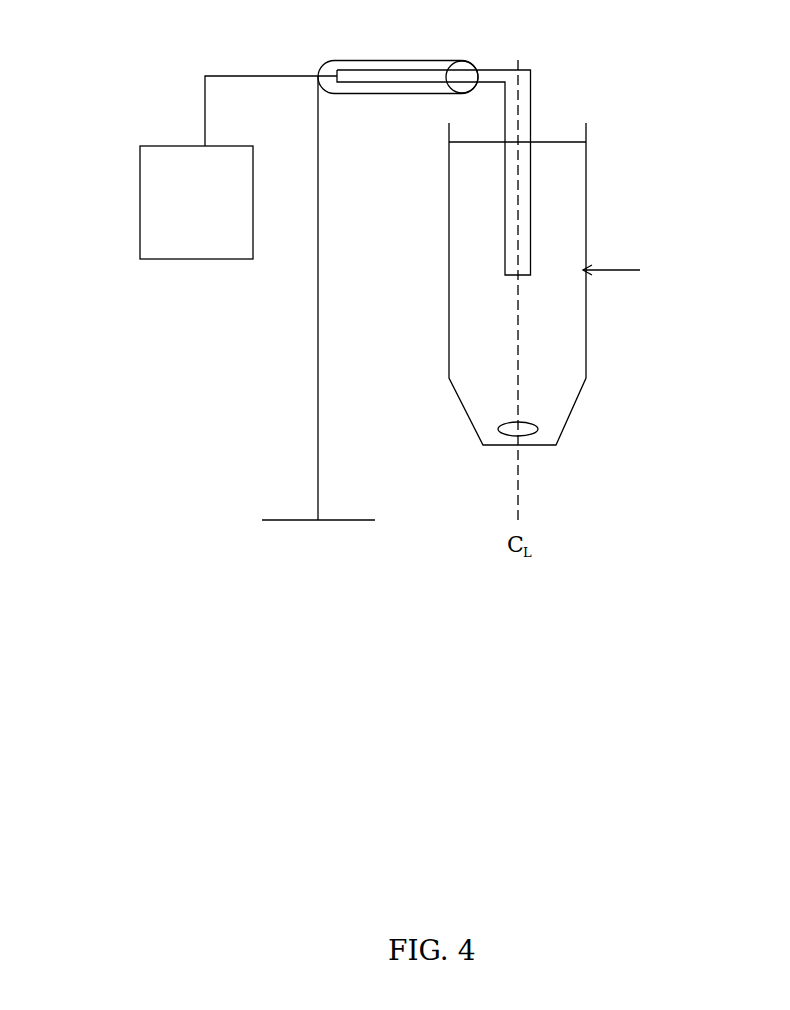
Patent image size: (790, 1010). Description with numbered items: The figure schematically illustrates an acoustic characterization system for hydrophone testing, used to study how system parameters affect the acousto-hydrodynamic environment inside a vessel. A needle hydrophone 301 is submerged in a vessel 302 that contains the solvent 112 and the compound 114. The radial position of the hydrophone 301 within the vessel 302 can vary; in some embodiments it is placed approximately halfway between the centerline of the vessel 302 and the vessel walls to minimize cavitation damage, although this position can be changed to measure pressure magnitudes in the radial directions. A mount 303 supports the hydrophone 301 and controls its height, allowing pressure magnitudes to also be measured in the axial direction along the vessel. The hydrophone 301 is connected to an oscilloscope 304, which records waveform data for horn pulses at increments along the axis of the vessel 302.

The vessel / container 112 is at (571, 219).
The outlet opening 114 is at (522, 428).
The pipette / tube holder 301 is at (482, 73).
The direction arrow / flow 302 is at (633, 271).
The stand 303 is at (318, 437).
The supply unit / source box 304 is at (158, 215).